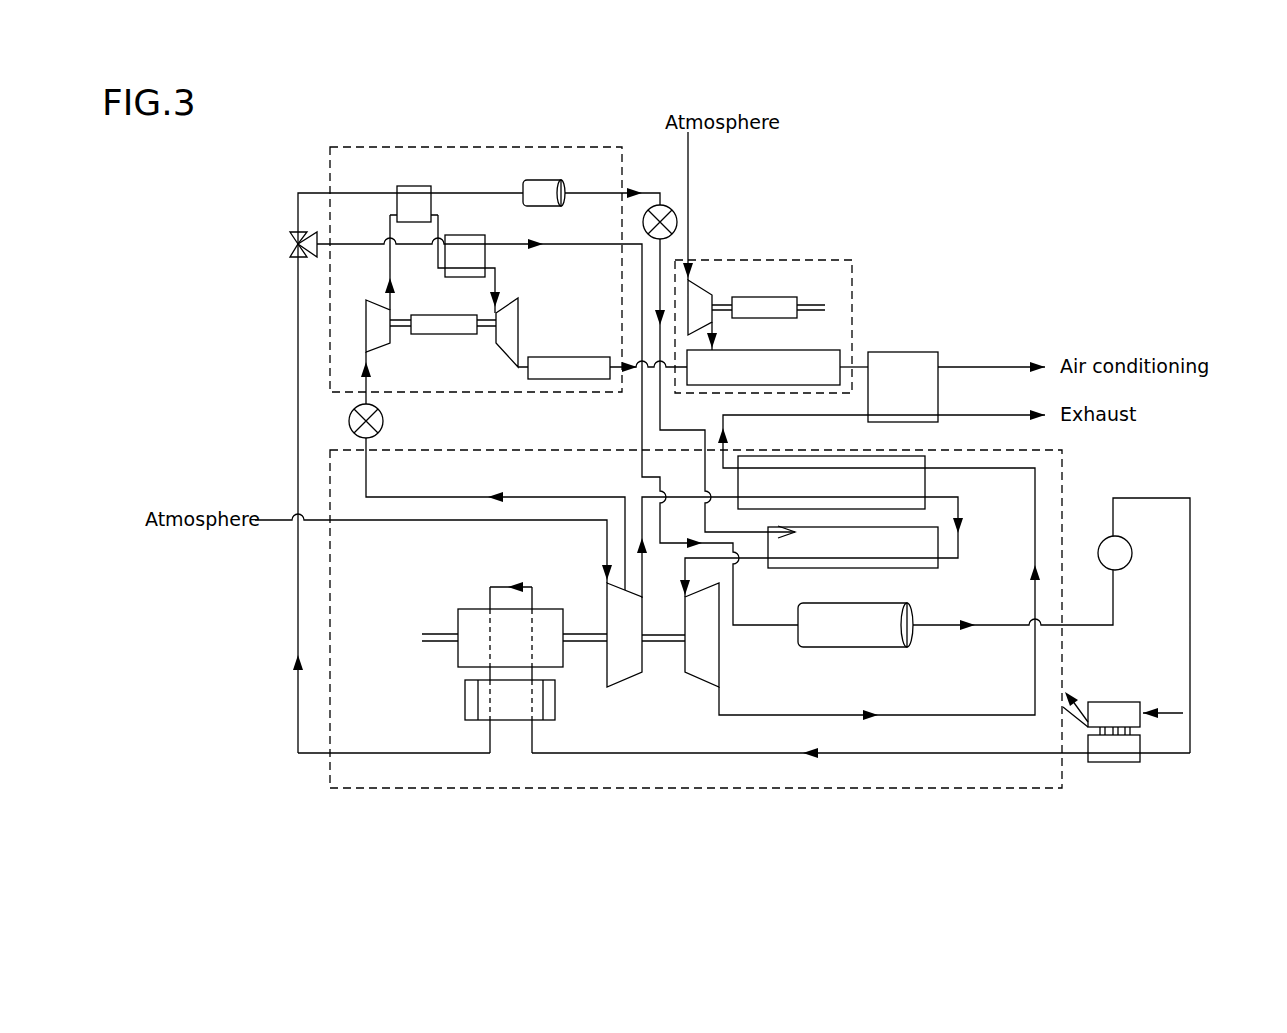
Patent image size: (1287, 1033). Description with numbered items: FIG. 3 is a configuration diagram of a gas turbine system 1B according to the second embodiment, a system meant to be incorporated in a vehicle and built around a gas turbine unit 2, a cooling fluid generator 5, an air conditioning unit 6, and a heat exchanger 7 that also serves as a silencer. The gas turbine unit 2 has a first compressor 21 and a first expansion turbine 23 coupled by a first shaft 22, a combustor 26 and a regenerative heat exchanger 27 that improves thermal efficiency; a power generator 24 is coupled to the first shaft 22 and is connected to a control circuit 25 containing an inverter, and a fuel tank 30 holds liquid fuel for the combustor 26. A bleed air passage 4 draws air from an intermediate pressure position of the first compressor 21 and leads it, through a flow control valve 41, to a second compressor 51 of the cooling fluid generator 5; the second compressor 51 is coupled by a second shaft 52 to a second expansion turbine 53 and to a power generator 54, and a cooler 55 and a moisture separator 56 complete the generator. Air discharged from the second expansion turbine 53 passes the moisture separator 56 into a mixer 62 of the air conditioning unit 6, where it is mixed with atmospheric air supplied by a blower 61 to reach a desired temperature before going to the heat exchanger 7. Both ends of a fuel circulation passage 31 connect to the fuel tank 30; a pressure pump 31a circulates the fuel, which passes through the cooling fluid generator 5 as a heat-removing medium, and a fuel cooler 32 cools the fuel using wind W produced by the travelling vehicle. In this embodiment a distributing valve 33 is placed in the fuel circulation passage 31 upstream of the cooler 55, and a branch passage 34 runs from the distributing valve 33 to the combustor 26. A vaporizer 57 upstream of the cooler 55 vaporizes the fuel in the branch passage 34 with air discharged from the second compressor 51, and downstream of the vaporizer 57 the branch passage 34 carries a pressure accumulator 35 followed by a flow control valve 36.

The gas turbine system 1B is at (1060, 196).
The gas turbine unit 2 is at (805, 790).
The bleed air passage 4 is at (541, 497).
The cooling fluid generator 5 is at (487, 147).
The air conditioning unit 6 is at (815, 260).
The heat exchanger 7 is at (905, 352).
The first compressor 21 is at (625, 688).
The first shaft 22 is at (663, 643).
The first expansion turbine 23 is at (697, 688).
The power generator 24 is at (473, 609).
The control circuit 25 is at (465, 697).
The combustor 26 is at (908, 570).
The regenerative heat exchanger 27 is at (925, 480).
The fuel tank 30 is at (878, 647).
The fuel circulation passage 31 is at (1190, 622).
The pressure pump 31a is at (1128, 568).
The fuel cooler 32 is at (1112, 702).
The distributing valve 33 is at (290, 243).
The branch passage 34 is at (315, 192).
The pressure accumulator 35 is at (545, 180).
The flow control valve 36 is at (668, 206).
The flow control valve 41 is at (383, 421).
The second compressor 51 is at (381, 345).
The second shaft 52 is at (487, 327).
The second expansion turbine 53 is at (519, 325).
The power generator 54 is at (447, 334).
The cooler 55 is at (487, 256).
The moisture separator 56 is at (578, 357).
The vaporizer 57 is at (400, 186).
The blower 61 is at (700, 288).
The mixer 62 is at (820, 347).
The wind W is at (1172, 712).